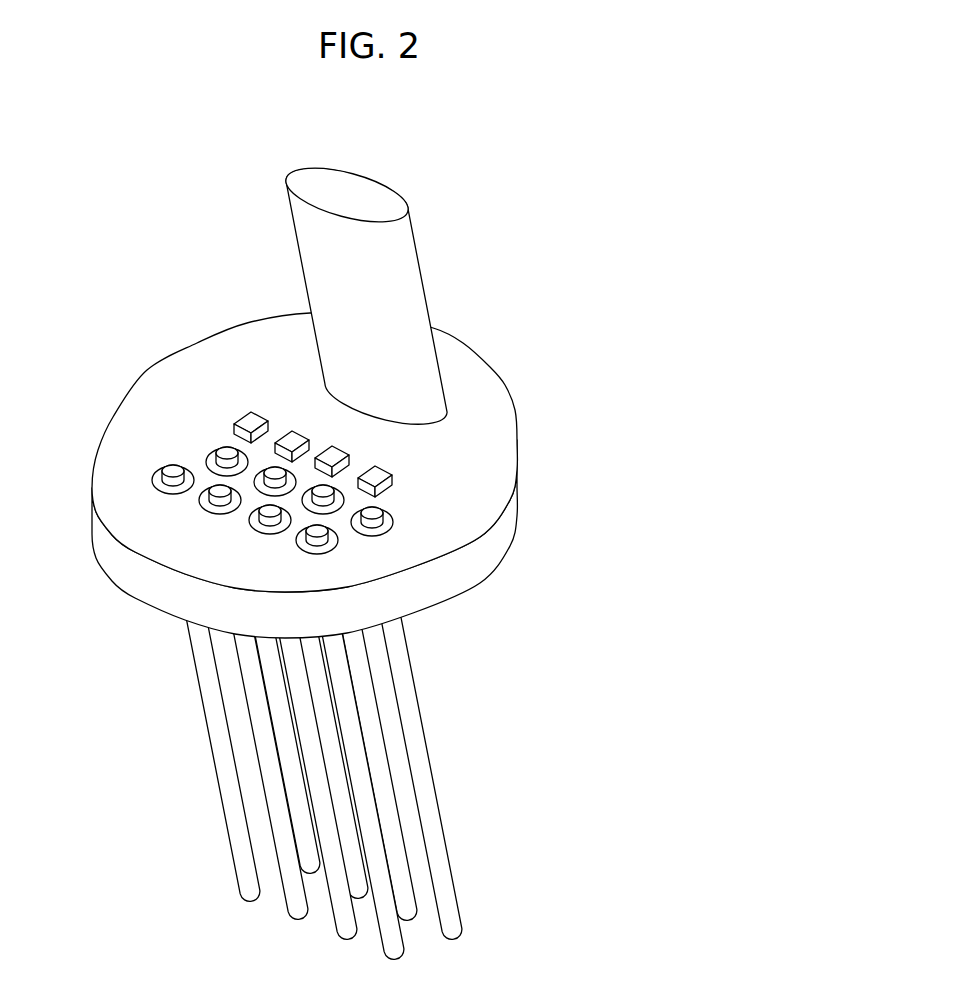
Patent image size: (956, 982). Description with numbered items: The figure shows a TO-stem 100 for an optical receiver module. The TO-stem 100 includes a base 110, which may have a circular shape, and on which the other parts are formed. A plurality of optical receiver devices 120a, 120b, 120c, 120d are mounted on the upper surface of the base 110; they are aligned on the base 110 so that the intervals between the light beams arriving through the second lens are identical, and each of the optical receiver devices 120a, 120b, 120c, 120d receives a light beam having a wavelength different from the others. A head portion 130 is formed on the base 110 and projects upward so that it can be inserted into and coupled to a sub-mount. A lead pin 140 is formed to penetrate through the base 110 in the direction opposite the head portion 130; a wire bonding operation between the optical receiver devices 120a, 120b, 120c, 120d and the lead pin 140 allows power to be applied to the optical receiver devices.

The TO-stem 100 is at (362, 558).
The base 110 is at (487, 385).
The optical receiver device 120a is at (378, 476).
The optical receiver device 120b is at (343, 452).
The optical receiver device 120c is at (293, 433).
The optical receiver device 120d is at (250, 420).
The head portion 130 is at (392, 268).
The lead pin 140 is at (453, 893).